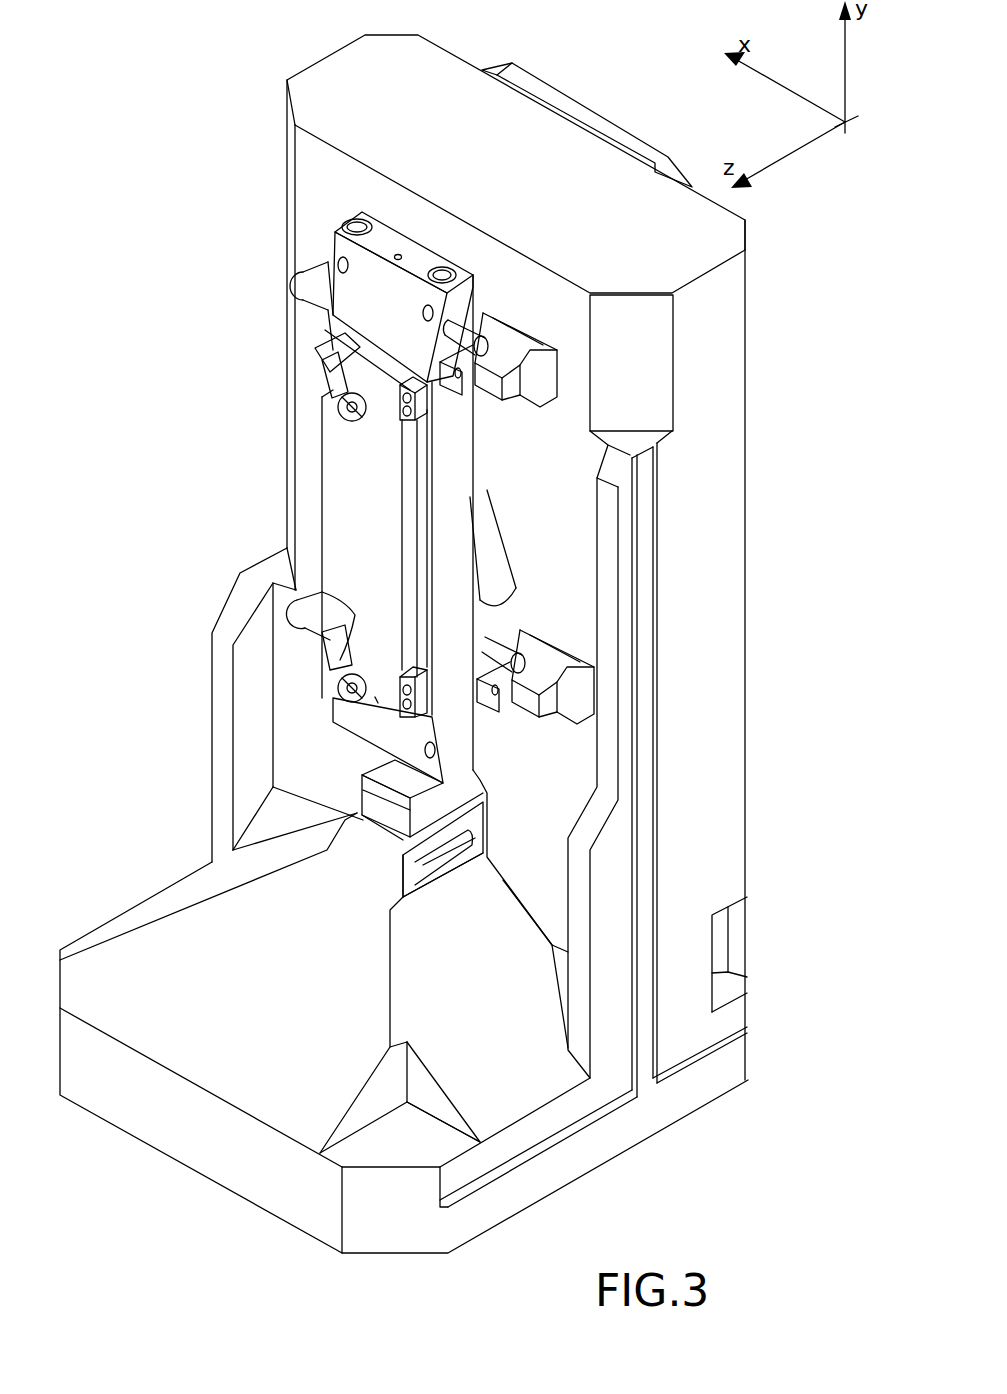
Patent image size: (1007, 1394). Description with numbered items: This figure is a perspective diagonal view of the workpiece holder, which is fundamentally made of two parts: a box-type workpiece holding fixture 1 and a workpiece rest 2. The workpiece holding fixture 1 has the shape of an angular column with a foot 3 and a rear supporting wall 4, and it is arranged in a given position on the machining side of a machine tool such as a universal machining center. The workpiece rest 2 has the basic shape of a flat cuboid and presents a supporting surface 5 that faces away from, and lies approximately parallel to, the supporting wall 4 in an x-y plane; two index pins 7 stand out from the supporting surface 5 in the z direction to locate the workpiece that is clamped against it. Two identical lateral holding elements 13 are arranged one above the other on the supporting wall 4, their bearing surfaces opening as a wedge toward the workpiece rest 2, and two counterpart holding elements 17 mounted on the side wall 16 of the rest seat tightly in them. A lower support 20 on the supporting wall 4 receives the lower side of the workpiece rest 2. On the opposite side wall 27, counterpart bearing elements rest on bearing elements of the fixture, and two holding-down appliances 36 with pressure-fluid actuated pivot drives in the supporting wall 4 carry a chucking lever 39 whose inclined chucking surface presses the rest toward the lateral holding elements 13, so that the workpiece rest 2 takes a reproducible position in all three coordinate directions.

The workpiece holding fixture 1 is at (314, 163).
The workpiece rest 2 is at (468, 486).
The foot 3 is at (222, 1043).
The rear supporting wall 4 is at (715, 635).
The supporting surface 5 is at (382, 521).
The index pins 7 is at (335, 410).
The lateral holding elements 13 is at (523, 322).
The side wall 16 is at (450, 522).
The counterpart holding elements 17 is at (458, 397).
The lower support 20 is at (382, 780).
The side wall 27 is at (320, 490).
The holding-down appliances 36 is at (300, 301).
The chucking lever 39 is at (305, 285).